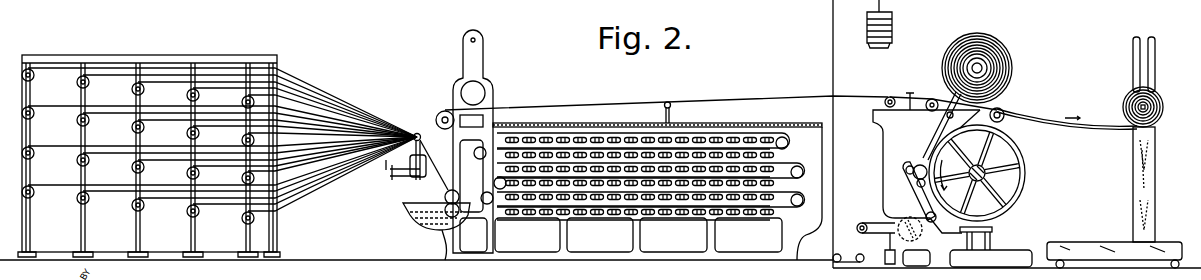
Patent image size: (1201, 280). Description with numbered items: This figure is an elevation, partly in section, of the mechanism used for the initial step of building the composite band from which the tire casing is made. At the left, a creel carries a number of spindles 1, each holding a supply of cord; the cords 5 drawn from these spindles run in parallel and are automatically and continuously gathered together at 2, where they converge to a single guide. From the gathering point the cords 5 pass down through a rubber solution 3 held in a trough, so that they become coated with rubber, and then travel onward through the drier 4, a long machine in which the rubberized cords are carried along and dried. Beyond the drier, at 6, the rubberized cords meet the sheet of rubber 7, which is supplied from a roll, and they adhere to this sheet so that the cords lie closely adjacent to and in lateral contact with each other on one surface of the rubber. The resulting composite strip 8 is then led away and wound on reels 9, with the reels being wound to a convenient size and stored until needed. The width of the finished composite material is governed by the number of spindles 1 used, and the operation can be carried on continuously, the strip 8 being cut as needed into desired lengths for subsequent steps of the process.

The spindles 1 is at (77, 85).
The gathering point 2 is at (417, 134).
The rubber solution 3 is at (413, 227).
The drier 4 is at (562, 120).
The cords 5 is at (313, 147).
The meeting point 6 is at (928, 157).
The sheet of rubber 7 is at (937, 123).
The composite strip 8 is at (1057, 123).
The reels 9 is at (1125, 100).